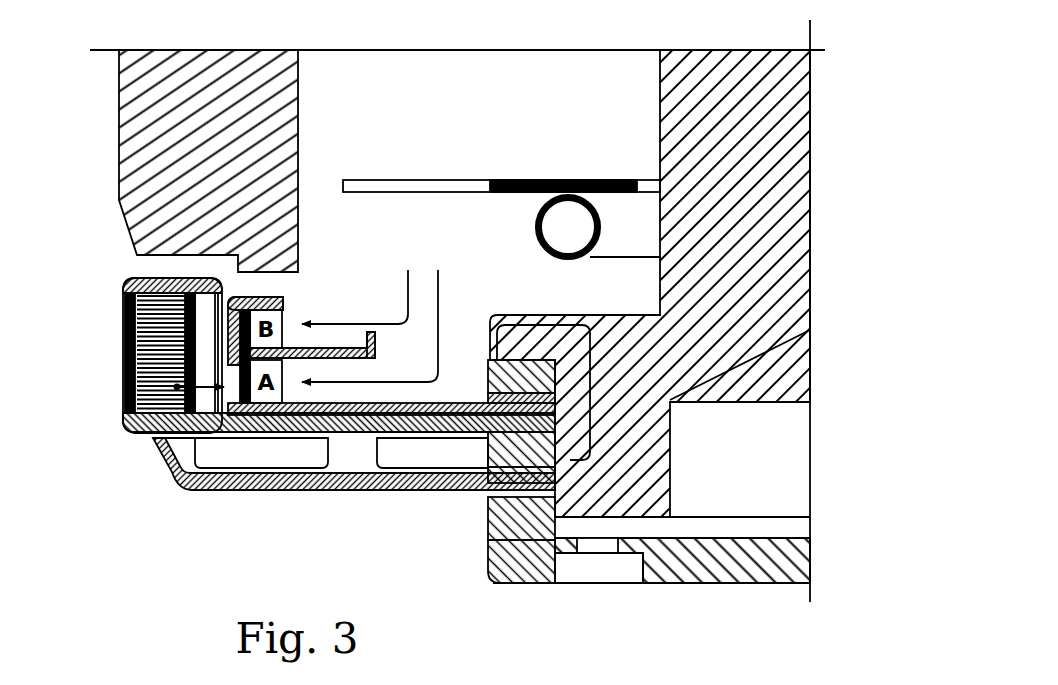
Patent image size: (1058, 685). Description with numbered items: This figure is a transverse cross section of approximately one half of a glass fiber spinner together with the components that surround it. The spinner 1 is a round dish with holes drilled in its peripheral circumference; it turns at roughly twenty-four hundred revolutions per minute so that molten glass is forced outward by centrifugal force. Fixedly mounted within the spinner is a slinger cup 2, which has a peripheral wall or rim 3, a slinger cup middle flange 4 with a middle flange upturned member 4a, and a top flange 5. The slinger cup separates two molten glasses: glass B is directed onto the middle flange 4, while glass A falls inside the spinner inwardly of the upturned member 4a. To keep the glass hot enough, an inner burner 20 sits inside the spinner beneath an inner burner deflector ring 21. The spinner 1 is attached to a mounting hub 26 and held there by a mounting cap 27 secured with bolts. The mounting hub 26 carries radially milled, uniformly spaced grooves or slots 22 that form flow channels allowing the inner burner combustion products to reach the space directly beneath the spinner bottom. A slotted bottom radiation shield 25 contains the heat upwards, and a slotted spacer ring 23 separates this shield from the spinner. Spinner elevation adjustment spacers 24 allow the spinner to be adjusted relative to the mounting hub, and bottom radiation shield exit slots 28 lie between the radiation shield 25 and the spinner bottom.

The spinner 1 is at (135, 428).
The slinger cup 2 is at (333, 403).
The peripheral wall or rim 3 is at (258, 313).
The slinger cup middle flange 4 is at (310, 350).
The middle flange upturned member 4a is at (375, 340).
The top flange 5 is at (262, 300).
The inner burner 20 is at (568, 228).
The inner burner deflector ring 21 is at (492, 180).
The grooves or slots 22 is at (578, 447).
The slotted spacer ring 23 is at (488, 515).
The spinner elevation adjustment spacers 24 is at (496, 375).
The slotted bottom radiation shield 25 is at (318, 490).
The mounting hub 26 is at (788, 192).
The mounting cap 27 is at (492, 562).
The bottom radiation shield exit slots 28 is at (257, 457).